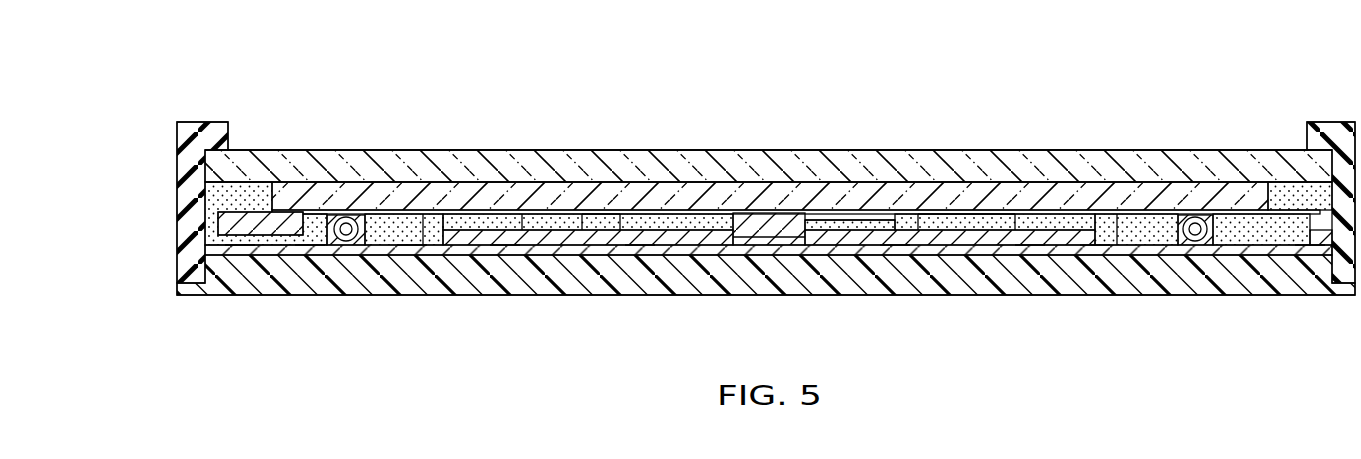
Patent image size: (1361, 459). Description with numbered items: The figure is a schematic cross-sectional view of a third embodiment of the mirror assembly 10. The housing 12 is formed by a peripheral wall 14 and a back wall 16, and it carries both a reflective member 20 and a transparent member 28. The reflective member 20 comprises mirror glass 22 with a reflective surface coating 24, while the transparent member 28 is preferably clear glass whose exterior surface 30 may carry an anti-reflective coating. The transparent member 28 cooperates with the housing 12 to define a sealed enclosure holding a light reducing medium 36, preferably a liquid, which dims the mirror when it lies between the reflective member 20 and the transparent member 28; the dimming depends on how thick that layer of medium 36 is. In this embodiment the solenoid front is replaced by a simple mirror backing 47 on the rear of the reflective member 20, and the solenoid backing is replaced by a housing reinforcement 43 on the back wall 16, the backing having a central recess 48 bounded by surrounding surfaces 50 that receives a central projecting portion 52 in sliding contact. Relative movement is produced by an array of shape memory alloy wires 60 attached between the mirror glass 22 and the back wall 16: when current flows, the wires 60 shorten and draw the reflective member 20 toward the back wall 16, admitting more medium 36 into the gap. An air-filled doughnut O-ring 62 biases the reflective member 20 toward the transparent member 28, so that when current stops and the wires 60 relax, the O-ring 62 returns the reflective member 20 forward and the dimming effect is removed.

The mirror assembly 10 is at (240, 74).
The housing 12 is at (176, 175).
The peripheral wall 14 is at (178, 259).
The back wall 16 is at (462, 275).
The reflective member 20 is at (392, 186).
The mirror glass 22 is at (453, 186).
The reflective surface coating 24 is at (556, 183).
The transparent member 28 is at (318, 160).
The exterior surface 30 is at (833, 150).
The light reducing medium 36 is at (1255, 232).
The housing reinforcement 43 is at (975, 222).
The mirror backing 47 is at (584, 222).
The central recess 48 is at (790, 232).
The surrounding surfaces 50 is at (745, 240).
The central projecting portion 52 is at (812, 225).
The shape memory alloy wires 60 is at (240, 247).
The air-filled doughnut O-ring 62 is at (347, 243).